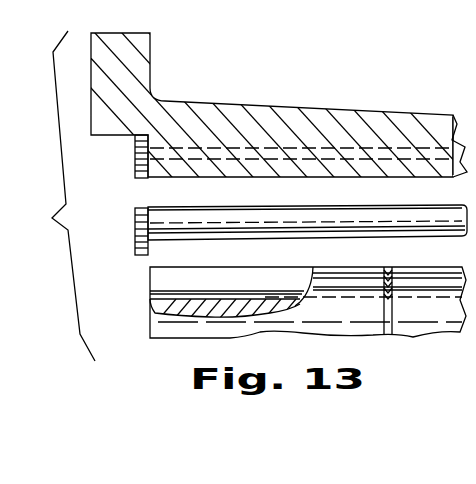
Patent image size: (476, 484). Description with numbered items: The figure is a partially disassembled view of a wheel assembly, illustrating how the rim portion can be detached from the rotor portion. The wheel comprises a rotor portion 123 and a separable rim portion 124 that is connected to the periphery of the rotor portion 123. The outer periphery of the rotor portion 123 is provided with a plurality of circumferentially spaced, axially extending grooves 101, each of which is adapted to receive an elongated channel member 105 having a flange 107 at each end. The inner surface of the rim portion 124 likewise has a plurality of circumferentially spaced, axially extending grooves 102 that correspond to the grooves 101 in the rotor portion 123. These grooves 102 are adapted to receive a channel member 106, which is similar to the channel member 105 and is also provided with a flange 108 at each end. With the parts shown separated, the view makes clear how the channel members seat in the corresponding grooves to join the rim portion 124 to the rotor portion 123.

The axially extending groove 101 is at (174, 297).
The axially extending groove 102 is at (264, 151).
The channel member 105 is at (409, 215).
The channel member 106 is at (438, 142).
The flange 107 is at (142, 232).
The flange 108 is at (137, 173).
The rotor portion 123 is at (401, 336).
The rim portion 124 is at (360, 128).